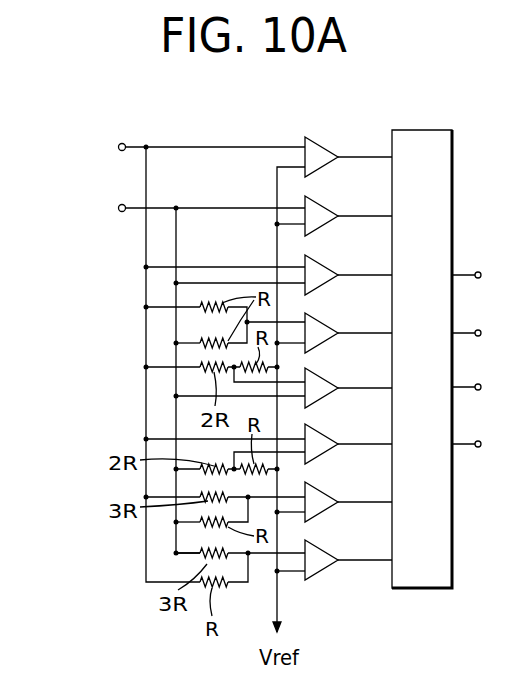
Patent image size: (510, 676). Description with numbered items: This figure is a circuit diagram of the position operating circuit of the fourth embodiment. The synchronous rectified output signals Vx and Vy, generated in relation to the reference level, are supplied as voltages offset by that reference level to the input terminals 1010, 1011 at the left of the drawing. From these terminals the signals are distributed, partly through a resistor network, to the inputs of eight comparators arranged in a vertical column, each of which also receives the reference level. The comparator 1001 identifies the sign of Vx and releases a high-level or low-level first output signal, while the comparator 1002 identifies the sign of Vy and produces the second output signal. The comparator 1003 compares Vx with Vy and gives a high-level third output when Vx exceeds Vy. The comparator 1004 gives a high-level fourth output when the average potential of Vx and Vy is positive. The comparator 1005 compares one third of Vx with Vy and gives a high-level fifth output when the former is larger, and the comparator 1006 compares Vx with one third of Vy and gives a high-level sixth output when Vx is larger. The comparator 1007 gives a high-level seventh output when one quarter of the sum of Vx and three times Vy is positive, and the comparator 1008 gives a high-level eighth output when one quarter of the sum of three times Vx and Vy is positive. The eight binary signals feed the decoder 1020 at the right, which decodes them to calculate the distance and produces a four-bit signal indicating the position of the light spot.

The comparator 1001 is at (312, 142).
The comparator 1002 is at (320, 196).
The comparator 1003 is at (318, 257).
The comparator 1004 is at (318, 315).
The comparator 1005 is at (318, 370).
The comparator 1006 is at (318, 427).
The comparator 1007 is at (318, 485).
The comparator 1008 is at (318, 543).
The input terminal 1010 is at (130, 144).
The input terminal 1011 is at (130, 212).
The decoder 1020 is at (424, 592).